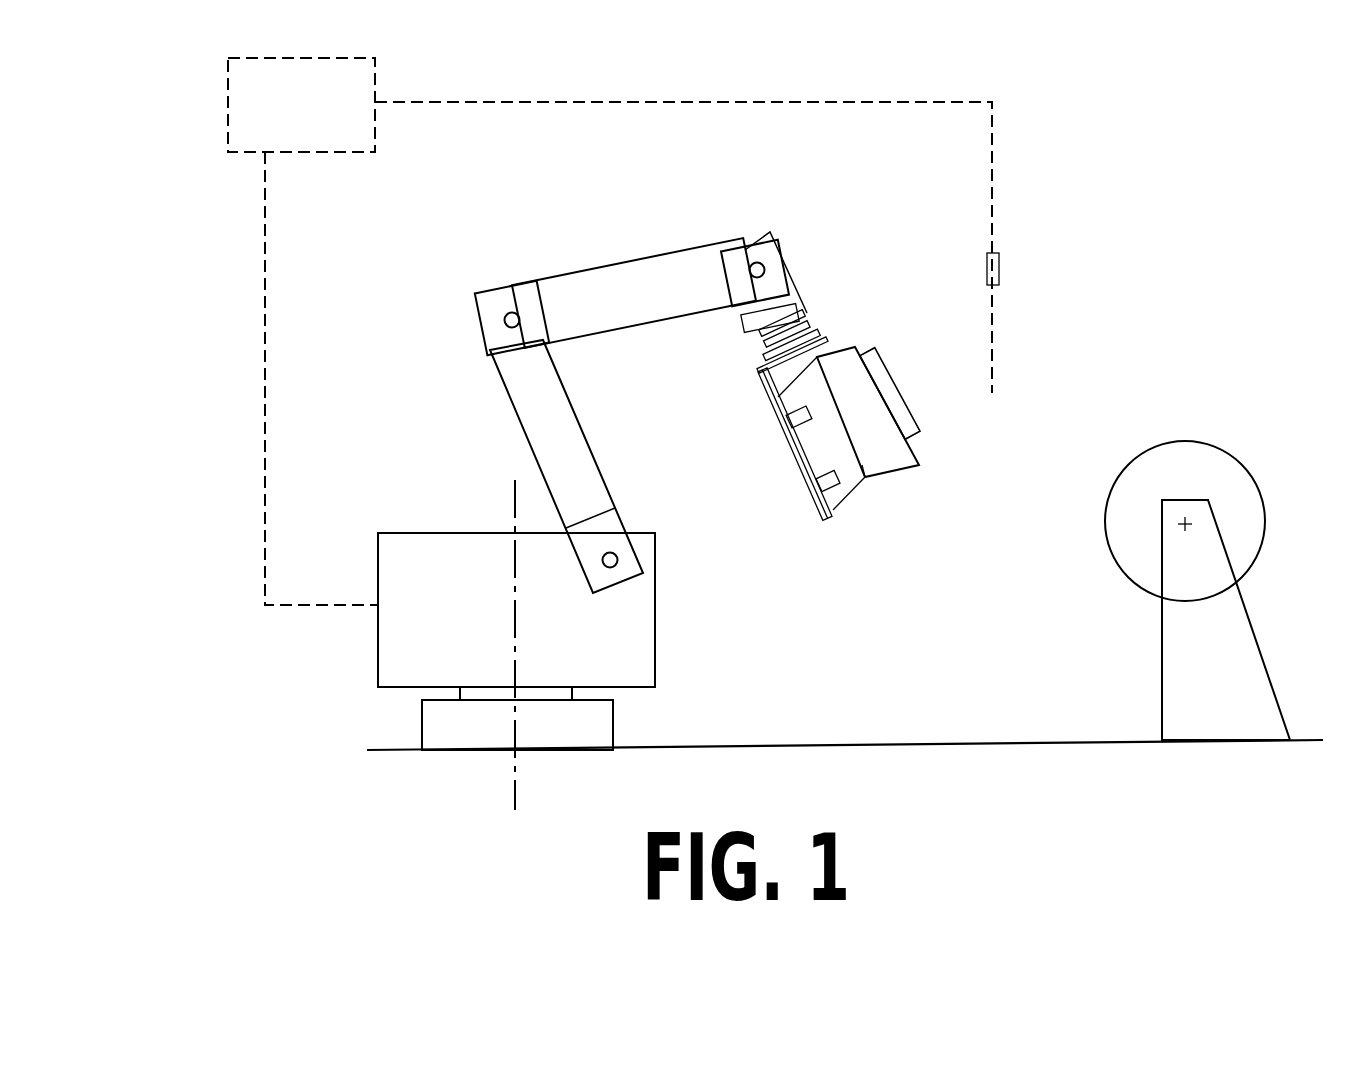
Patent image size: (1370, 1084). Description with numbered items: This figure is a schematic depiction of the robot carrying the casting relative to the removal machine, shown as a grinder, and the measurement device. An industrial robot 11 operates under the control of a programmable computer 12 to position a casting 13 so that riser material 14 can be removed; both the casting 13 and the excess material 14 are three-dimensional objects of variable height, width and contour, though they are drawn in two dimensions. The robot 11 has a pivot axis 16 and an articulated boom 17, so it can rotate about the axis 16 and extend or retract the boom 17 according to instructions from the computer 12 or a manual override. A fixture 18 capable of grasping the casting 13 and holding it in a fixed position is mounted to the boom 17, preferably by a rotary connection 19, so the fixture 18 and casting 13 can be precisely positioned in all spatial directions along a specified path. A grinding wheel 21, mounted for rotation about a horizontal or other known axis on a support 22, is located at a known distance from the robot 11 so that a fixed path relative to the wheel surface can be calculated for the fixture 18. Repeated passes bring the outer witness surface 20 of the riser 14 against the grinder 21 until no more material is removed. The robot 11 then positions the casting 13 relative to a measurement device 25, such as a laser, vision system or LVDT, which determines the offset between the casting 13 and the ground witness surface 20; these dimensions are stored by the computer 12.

The industrial robot 11 is at (403, 568).
The programmable computer 12 is at (610, 331).
The casting 13 is at (863, 470).
The riser material 14 is at (900, 393).
The pivot axis 16 is at (513, 515).
The articulated boom 17 is at (625, 235).
The fixture 18 is at (798, 468).
The rotary connection 19 is at (767, 345).
The outer witness surface 20 is at (922, 416).
The grinding wheel 21 is at (1181, 468).
The support 22 is at (1222, 640).
The measurement device 25 is at (997, 270).